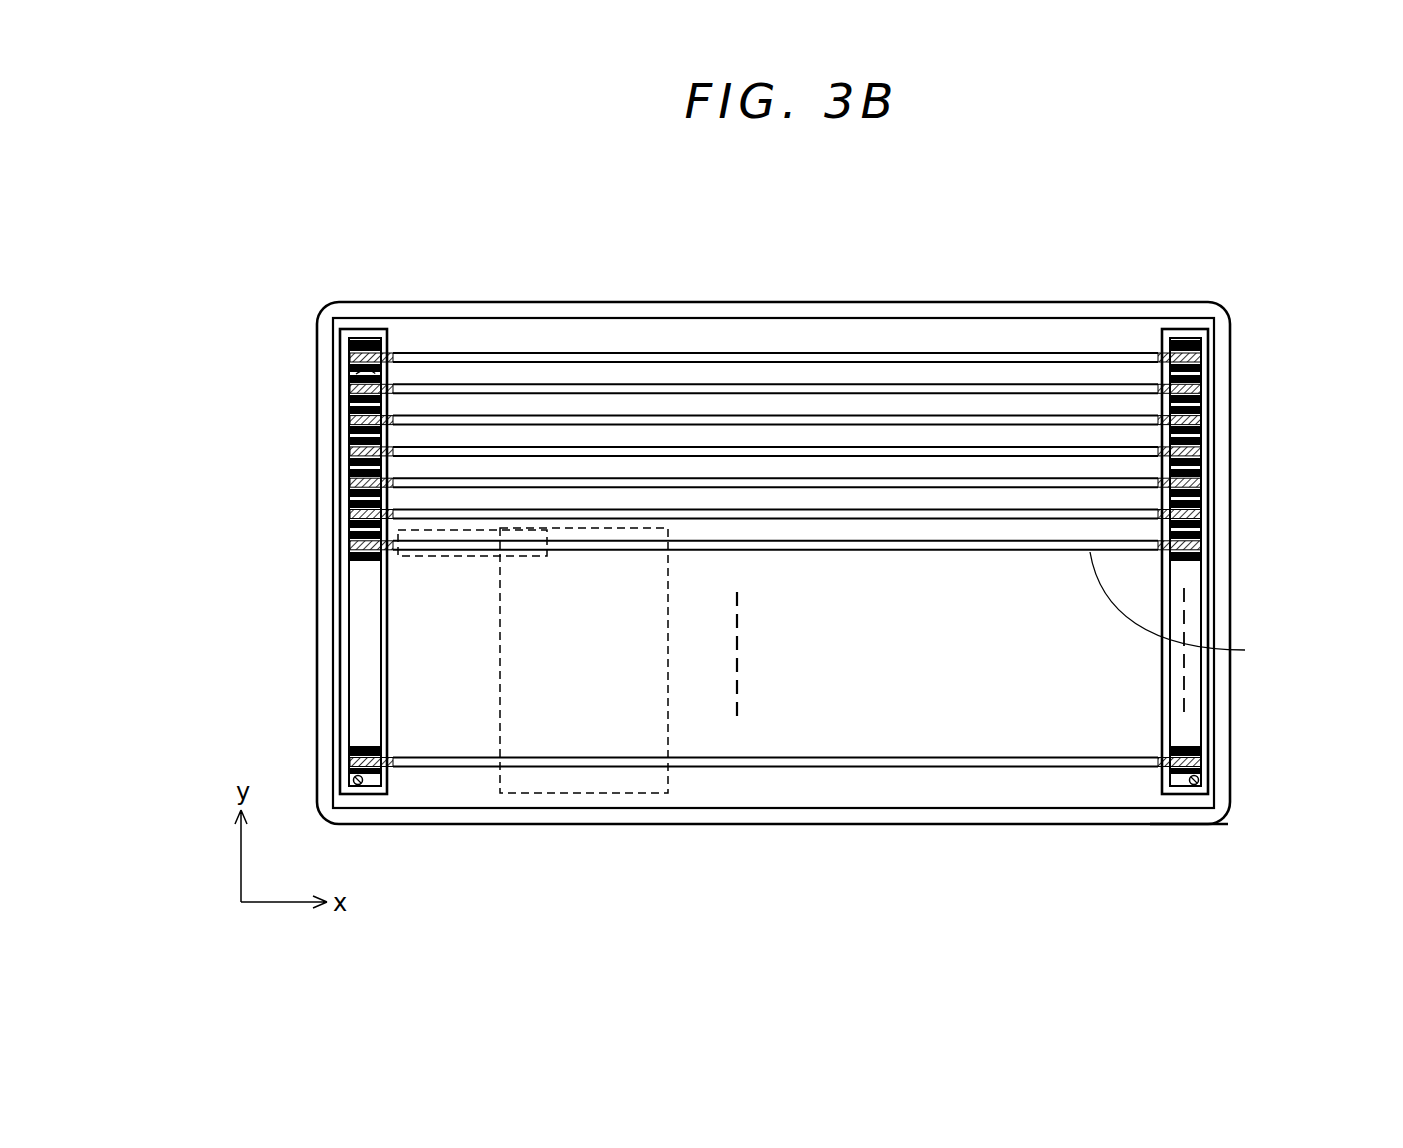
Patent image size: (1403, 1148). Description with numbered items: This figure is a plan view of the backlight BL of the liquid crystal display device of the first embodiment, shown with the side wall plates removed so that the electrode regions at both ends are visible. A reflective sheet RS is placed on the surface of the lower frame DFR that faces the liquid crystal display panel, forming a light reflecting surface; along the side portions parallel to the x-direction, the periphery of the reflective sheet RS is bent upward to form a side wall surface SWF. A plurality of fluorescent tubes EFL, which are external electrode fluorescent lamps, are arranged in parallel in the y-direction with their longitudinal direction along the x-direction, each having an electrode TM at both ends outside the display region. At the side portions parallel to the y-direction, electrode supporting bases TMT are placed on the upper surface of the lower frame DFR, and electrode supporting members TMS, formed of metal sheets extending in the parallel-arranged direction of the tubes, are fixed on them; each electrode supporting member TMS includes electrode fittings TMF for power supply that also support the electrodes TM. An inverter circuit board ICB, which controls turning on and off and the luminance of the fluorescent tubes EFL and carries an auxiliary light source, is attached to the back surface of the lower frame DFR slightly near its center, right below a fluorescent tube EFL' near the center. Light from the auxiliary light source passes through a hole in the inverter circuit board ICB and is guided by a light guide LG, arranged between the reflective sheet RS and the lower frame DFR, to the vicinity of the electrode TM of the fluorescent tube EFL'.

The backlight BL is at (975, 285).
The side wall surface SWF is at (1132, 308).
The reflective sheet RS is at (948, 795).
The lower frame DFR is at (1180, 826).
The electrode supporting base TMT is at (350, 557).
The fluorescent tube EFL is at (775, 394).
The fluorescent tube near the center EFL' is at (1197, 608).
The electrode TM is at (366, 756).
The electrode fitting TMF is at (350, 342).
The electrode supporting member TMS is at (350, 402).
The light guide LG is at (440, 530).
The inverter circuit board ICB is at (581, 795).